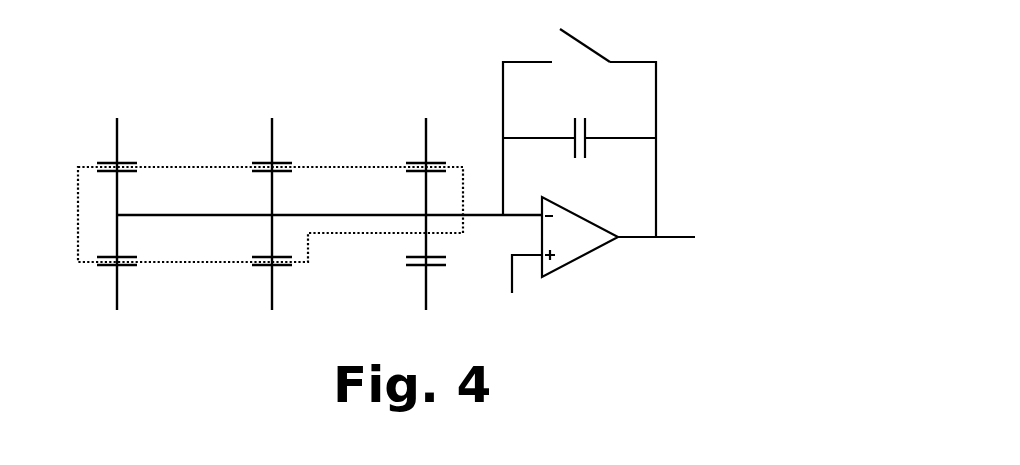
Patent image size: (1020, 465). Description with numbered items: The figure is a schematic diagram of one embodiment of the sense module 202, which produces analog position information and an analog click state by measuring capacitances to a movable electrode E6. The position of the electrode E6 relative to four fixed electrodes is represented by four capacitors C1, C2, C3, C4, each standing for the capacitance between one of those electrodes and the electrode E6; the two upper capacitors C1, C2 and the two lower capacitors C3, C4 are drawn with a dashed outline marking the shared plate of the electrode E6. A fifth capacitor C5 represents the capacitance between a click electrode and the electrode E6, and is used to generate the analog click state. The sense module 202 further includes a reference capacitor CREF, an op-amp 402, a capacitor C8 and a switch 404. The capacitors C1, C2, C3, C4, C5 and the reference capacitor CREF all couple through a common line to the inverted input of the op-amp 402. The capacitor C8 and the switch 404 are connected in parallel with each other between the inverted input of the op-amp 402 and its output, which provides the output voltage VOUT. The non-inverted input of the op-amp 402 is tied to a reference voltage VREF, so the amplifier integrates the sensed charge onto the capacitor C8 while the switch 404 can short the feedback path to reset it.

The capacitor C1 is at (100, 166).
The capacitor C2 is at (254, 166).
The capacitor C3 is at (100, 262).
The capacitor C4 is at (254, 262).
The capacitor C5 is at (409, 166).
The reference capacitor CREF is at (404, 262).
The capacitor C8 is at (579, 149).
The electrode E6 is at (78, 233).
The sense module 202 is at (188, 332).
The op-amp 402 is at (577, 260).
The switch 404 is at (582, 43).
The reference voltage VREF is at (513, 293).
The output VOUT is at (732, 240).